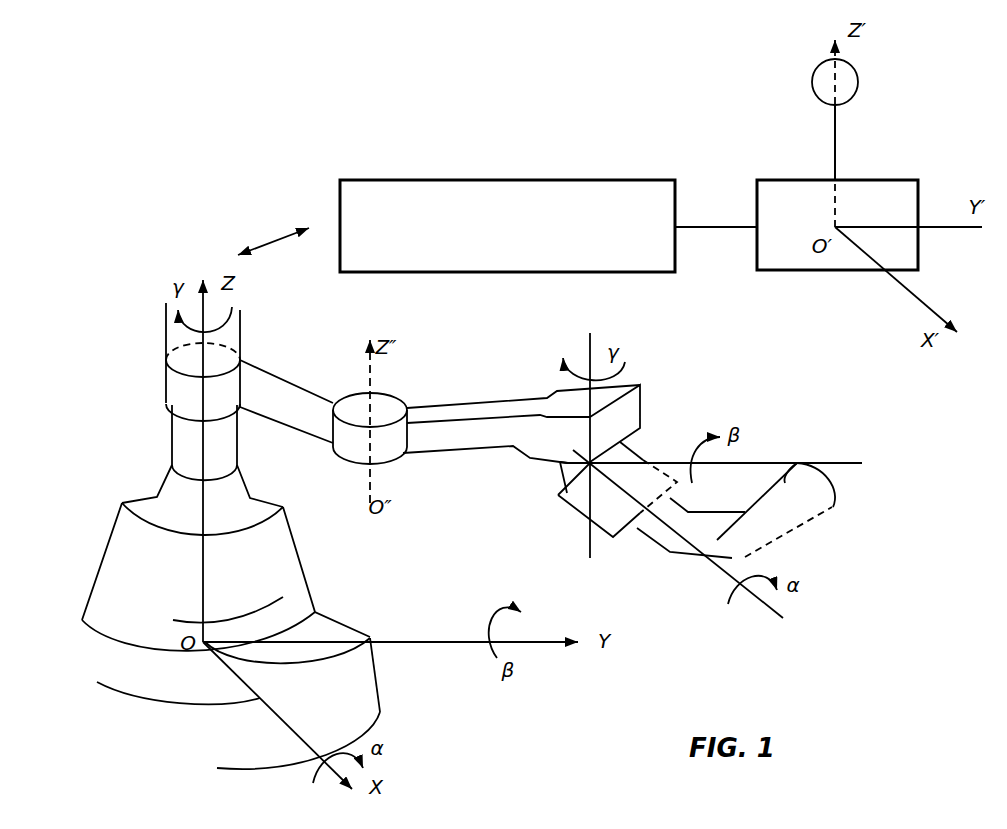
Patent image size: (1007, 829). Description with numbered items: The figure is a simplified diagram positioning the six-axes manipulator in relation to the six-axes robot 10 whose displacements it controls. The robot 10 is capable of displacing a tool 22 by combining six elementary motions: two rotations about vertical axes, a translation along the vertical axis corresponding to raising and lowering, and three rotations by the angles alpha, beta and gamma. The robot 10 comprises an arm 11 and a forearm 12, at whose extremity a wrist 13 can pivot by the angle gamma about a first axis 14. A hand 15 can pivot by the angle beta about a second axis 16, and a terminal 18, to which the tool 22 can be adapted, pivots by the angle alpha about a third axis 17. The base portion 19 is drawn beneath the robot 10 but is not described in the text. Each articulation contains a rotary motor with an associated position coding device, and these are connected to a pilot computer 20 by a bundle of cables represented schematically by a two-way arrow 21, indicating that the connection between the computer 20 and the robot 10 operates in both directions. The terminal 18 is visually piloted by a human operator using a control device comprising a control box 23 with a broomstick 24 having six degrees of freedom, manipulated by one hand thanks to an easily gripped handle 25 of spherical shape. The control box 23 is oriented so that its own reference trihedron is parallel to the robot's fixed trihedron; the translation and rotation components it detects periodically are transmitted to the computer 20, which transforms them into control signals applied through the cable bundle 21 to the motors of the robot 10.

The robot 10 is at (290, 567).
The arm 11 is at (278, 378).
The forearm 12 is at (458, 410).
The wrist 13 is at (568, 470).
The first axis 14 is at (590, 548).
The hand 15 is at (578, 497).
The second axis 16 is at (630, 460).
The third axis 17 is at (773, 612).
The terminal 18 is at (700, 518).
The base bottom portion 19 is at (367, 685).
The pilot computer 20 is at (507, 226).
The two-way arrow 21 is at (266, 243).
The tool 22 is at (792, 463).
The control box 23 is at (837, 225).
The broomstick 24 is at (835, 135).
The handle 25 is at (852, 84).